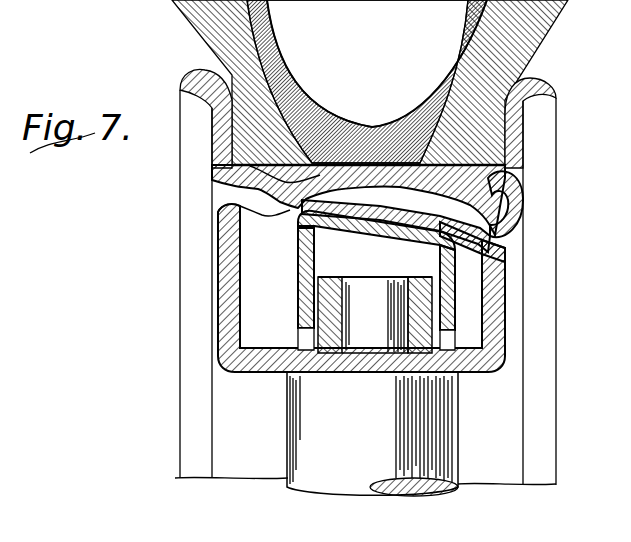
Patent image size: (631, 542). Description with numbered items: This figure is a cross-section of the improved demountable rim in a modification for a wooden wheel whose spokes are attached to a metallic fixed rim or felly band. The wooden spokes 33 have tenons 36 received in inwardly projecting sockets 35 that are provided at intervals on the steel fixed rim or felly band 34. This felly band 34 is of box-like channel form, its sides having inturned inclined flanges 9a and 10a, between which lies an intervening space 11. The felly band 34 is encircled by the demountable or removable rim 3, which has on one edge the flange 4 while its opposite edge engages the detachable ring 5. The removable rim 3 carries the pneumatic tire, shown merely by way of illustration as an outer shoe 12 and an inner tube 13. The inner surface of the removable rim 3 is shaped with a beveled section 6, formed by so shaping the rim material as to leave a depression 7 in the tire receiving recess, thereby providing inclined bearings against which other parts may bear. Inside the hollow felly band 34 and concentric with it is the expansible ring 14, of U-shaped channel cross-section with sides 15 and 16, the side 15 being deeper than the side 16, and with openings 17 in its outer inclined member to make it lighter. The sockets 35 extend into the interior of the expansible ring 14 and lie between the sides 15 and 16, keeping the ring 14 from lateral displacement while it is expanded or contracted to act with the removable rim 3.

The removable rim 3 is at (373, 126).
The flange 4 is at (203, 95).
The detachable ring 5 is at (537, 102).
The beveled section 6 is at (282, 193).
The depression 7 is at (285, 180).
The flange 9a is at (265, 219).
The flange 10a is at (470, 239).
The intervening space 11 is at (396, 216).
The outer shoe 12 is at (560, 32).
The inner tube 13 is at (460, 52).
The expansible ring 14 is at (376, 230).
The side 15 is at (300, 260).
The side 16 is at (455, 285).
The openings 17 is at (520, 193).
The wooden spokes 33 is at (372, 434).
The felly band 34 is at (488, 310).
The sockets 35 is at (352, 270).
The tenons 36 is at (375, 315).